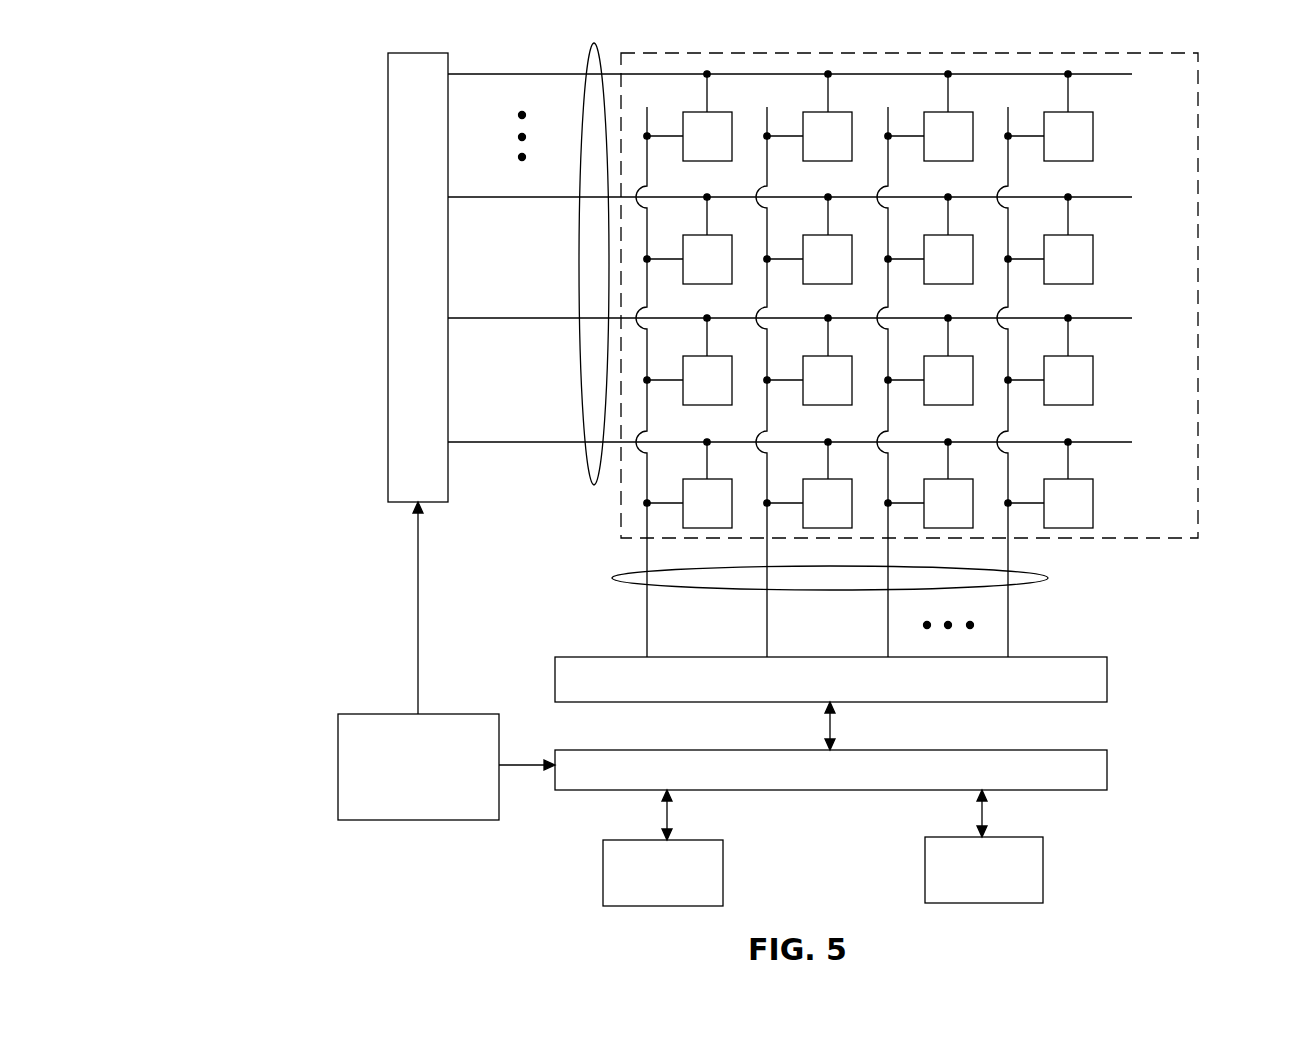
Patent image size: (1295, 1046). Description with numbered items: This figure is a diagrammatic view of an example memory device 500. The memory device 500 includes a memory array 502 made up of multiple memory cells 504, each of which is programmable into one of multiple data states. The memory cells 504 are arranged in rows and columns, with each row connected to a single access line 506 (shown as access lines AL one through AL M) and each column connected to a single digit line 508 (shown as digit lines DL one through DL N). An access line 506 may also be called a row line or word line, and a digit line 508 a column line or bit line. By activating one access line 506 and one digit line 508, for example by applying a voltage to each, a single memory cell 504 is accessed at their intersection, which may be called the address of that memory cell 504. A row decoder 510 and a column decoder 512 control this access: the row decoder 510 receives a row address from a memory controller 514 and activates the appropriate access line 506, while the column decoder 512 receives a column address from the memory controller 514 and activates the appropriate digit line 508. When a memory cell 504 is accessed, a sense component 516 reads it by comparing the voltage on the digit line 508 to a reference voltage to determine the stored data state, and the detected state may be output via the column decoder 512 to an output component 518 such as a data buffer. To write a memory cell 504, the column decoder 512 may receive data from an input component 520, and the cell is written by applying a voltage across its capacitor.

The memory device 500 is at (228, 71).
The memory array 502 is at (1198, 70).
The memory cell 504 is at (1093, 258).
The access line 506 is at (594, 485).
The digit line 508 is at (1047, 578).
The row decoder 510 is at (388, 405).
The column decoder 512 is at (1107, 782).
The memory controller 514 is at (418, 820).
The sense component 516 is at (1107, 690).
The output component 518 is at (1043, 870).
The input component 520 is at (723, 857).